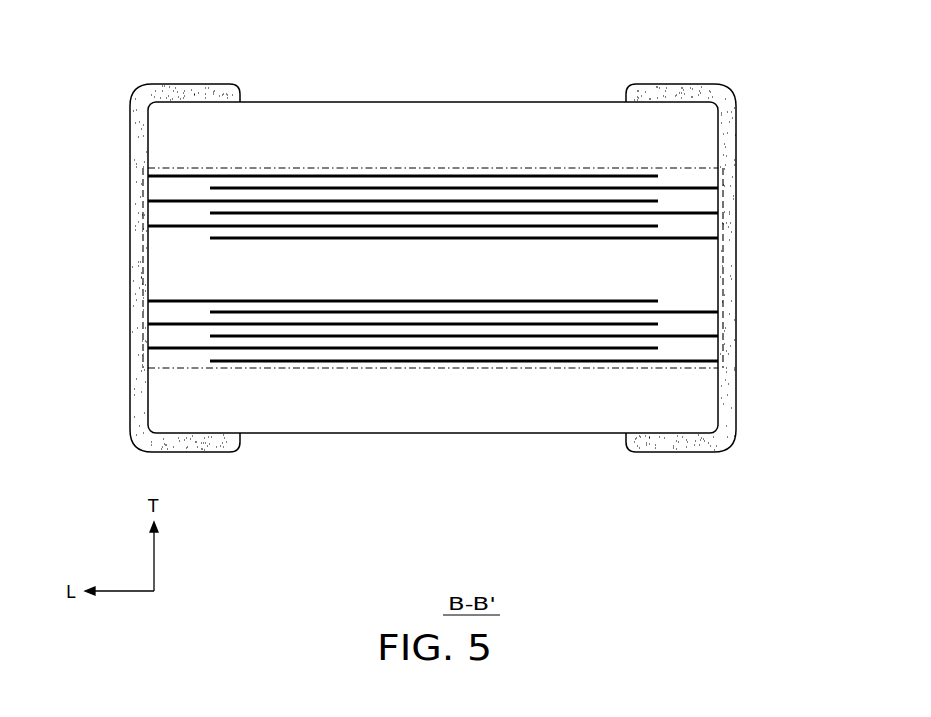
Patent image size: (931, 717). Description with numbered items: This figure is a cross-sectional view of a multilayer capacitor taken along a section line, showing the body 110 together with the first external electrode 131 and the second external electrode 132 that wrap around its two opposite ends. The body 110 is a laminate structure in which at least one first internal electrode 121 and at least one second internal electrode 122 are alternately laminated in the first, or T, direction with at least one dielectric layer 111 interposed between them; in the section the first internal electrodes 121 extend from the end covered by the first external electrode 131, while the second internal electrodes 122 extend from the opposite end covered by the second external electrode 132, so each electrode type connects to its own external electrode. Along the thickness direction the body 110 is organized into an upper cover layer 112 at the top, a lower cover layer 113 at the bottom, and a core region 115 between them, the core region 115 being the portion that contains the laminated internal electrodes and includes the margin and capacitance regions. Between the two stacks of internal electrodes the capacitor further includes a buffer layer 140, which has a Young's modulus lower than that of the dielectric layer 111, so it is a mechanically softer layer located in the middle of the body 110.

The body 110 is at (541, 101).
The dielectric layer 111 is at (445, 175).
The upper cover layer 112 is at (377, 126).
The lower cover layer 113 is at (510, 434).
The core region 115 is at (300, 168).
The first internal electrode 121 is at (166, 201).
The second internal electrode 122 is at (703, 200).
The first external electrode 131 is at (140, 157).
The second external electrode 132 is at (728, 141).
The buffer layer 140 is at (700, 270).